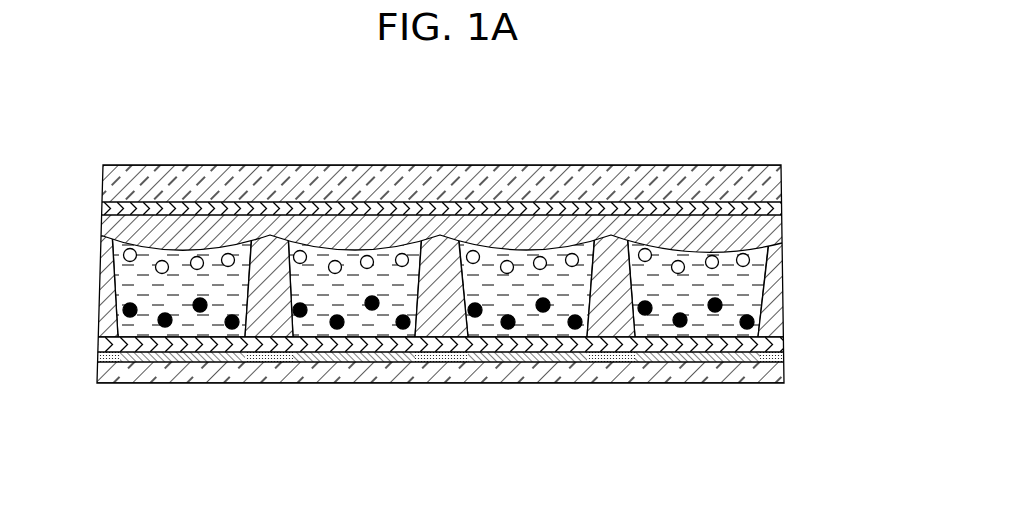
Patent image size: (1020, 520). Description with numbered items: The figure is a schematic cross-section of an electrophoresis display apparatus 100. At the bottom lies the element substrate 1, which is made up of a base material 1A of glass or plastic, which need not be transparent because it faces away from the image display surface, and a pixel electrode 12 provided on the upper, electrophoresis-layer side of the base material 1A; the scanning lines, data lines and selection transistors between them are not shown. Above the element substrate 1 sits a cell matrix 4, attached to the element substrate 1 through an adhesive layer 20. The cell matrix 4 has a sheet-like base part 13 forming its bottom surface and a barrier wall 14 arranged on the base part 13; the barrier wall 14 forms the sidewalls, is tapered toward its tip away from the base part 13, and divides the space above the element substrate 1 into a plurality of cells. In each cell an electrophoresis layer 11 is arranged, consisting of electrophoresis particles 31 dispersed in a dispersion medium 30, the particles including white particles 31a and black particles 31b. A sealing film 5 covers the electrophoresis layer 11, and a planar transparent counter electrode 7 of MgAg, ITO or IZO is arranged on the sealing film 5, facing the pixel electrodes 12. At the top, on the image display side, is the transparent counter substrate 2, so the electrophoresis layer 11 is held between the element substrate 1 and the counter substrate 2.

The electrophoresis display apparatus 100 is at (449, 286).
The counter substrate 2 is at (768, 186).
The counter electrode 7 is at (770, 205).
The sealing film 5 is at (770, 226).
The cell matrix 4 is at (442, 215).
The barrier wall 14 is at (445, 250).
The base part 13 is at (493, 350).
The electrophoresis layer 11 is at (407, 365).
The dispersion medium 30 is at (303, 334).
The electrophoresis particles 31 is at (438, 356).
The white particles 31a is at (406, 262).
The black particles 31b is at (372, 305).
The element substrate 1 is at (430, 399).
The pixel electrode 12 is at (698, 362).
The adhesive layer 20 is at (603, 360).
The base material 1A is at (758, 372).